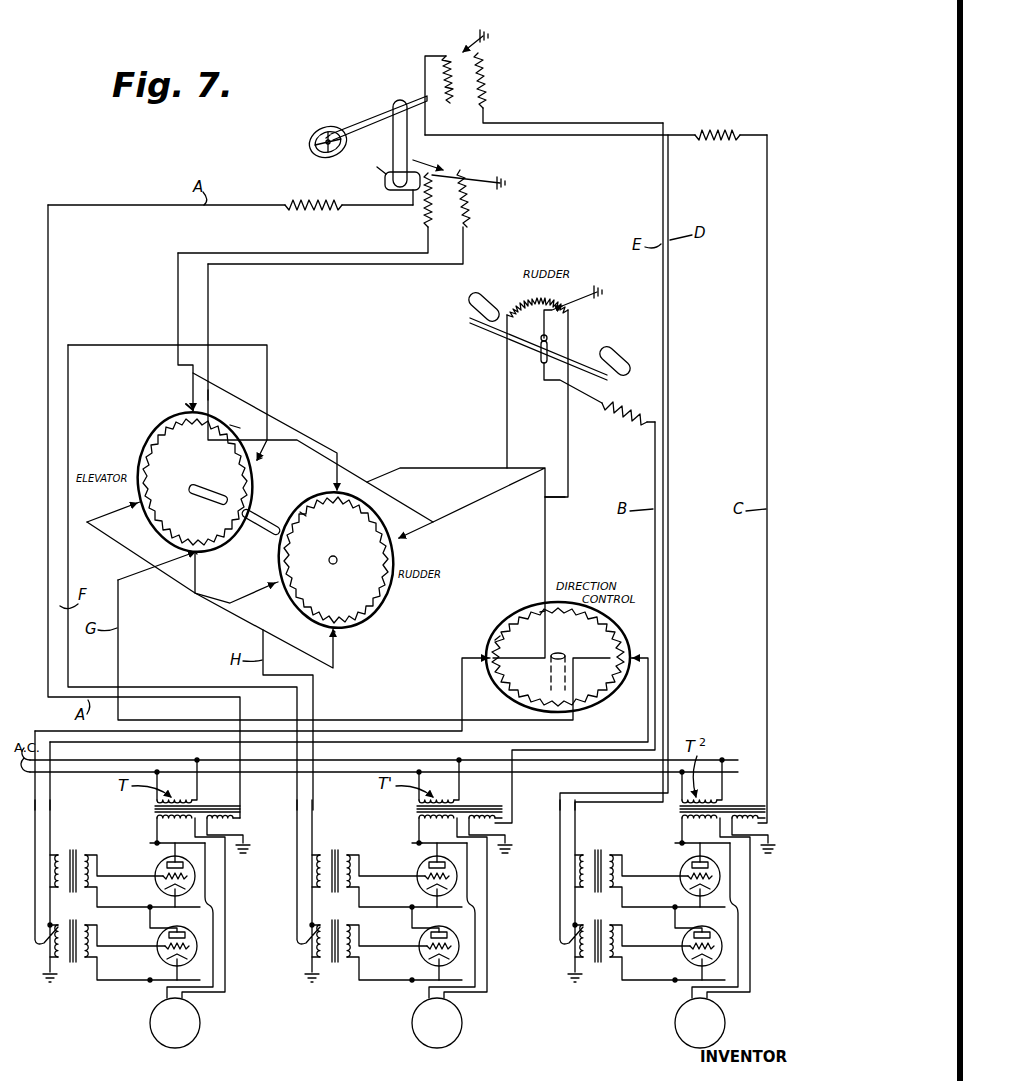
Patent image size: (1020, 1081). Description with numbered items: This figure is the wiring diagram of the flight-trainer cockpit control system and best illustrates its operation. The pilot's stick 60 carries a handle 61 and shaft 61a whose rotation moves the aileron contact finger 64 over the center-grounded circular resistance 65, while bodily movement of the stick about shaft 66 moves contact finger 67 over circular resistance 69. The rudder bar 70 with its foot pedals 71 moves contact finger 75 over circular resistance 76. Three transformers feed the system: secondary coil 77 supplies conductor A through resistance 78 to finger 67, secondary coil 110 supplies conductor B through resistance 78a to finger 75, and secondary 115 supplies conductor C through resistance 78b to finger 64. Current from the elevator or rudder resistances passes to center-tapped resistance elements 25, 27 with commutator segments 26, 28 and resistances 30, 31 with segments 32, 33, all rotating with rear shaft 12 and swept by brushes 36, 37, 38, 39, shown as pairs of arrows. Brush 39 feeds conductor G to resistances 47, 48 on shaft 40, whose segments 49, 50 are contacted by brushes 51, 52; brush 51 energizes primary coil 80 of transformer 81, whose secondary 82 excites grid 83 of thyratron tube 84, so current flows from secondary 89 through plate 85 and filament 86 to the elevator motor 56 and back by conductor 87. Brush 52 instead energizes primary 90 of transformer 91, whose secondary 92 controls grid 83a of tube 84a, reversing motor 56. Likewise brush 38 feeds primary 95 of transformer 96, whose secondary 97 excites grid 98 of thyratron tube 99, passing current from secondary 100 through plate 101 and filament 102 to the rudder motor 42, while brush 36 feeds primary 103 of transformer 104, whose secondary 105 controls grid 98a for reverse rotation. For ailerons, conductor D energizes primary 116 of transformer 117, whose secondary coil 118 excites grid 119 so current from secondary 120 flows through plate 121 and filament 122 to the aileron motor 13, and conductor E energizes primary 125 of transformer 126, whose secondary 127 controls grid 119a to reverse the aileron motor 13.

The rear shaft 12 is at (258, 528).
The aileron motor 13 is at (684, 1023).
The resistance element 25 is at (250, 437).
The commutator segments 26 is at (242, 427).
The second resistance element 27 is at (150, 440).
The commutator segments 28 is at (145, 463).
The resistance 30 is at (357, 622).
The resistance 31 is at (346, 491).
The commutator segments 32 is at (376, 598).
The commutator segments 33 is at (302, 512).
The brush 36 is at (186, 404).
The brush 37 is at (262, 462).
The brush 38 is at (186, 562).
The brush 39 is at (130, 505).
The shaft 40 is at (562, 652).
The rudder motor 42 is at (437, 1034).
The resistance 47 is at (612, 630).
The resistance 48 is at (498, 633).
The contact segments 49 is at (600, 616).
The contact segments 50 is at (535, 612).
The brush 51 is at (650, 655).
The brush 52 is at (462, 656).
The elevator motor 56 is at (172, 1048).
The stick 60 is at (394, 114).
The handle 61 is at (309, 143).
The stick shaft 61a is at (326, 135).
The contact finger 64 is at (441, 58).
The circular resistance 65 is at (487, 85).
The shaft 66 is at (384, 178).
The contact finger 67 is at (446, 166).
The circular resistance 69 is at (470, 225).
The rudder bar 70 is at (496, 329).
The foot pedals 71 is at (478, 300).
The contact finger 75 is at (541, 341).
The circular resistance 76 is at (578, 318).
The secondary coil 77 is at (225, 812).
The resistance 78 is at (296, 204).
The resistance 78a is at (618, 413).
The resistance 78b is at (718, 131).
The primary coil 80 is at (62, 852).
The transformer 81 is at (76, 846).
The secondary 82 is at (88, 855).
The grid 83 is at (163, 875).
The grid 83a is at (165, 950).
The thyratron tube 84 is at (197, 885).
The thyratron tube 84a is at (197, 946).
The plate 85 is at (155, 843).
The filament 86 is at (209, 902).
The conductor 87 is at (226, 976).
The secondary 89 is at (157, 818).
The primary 90 is at (54, 943).
The transformer 91 is at (73, 963).
The secondary 92 is at (88, 960).
The primary 95 is at (322, 839).
The transformer 96 is at (339, 850).
The secondary 97 is at (404, 865).
The grid 98 is at (412, 884).
The grid 98a is at (407, 984).
The thyratron tube 99 is at (470, 875).
The secondary 100 is at (418, 819).
The plate 101 is at (397, 847).
The filament 102 is at (481, 920).
The primary 103 is at (300, 967).
The transformer 104 is at (326, 970).
The secondary 105 is at (404, 966).
The secondary coil 110 is at (493, 822).
The secondary 115 is at (742, 815).
The primary 116 is at (589, 843).
The transformer 117 is at (603, 854).
The secondary coil 118 is at (667, 868).
The grid 119 is at (739, 875).
The grid 119a is at (741, 943).
The secondary 120 is at (679, 823).
The plate 121 is at (737, 858).
The filament 122 is at (745, 920).
The primary 125 is at (558, 965).
The transformer 126 is at (585, 970).
The secondary 127 is at (667, 967).